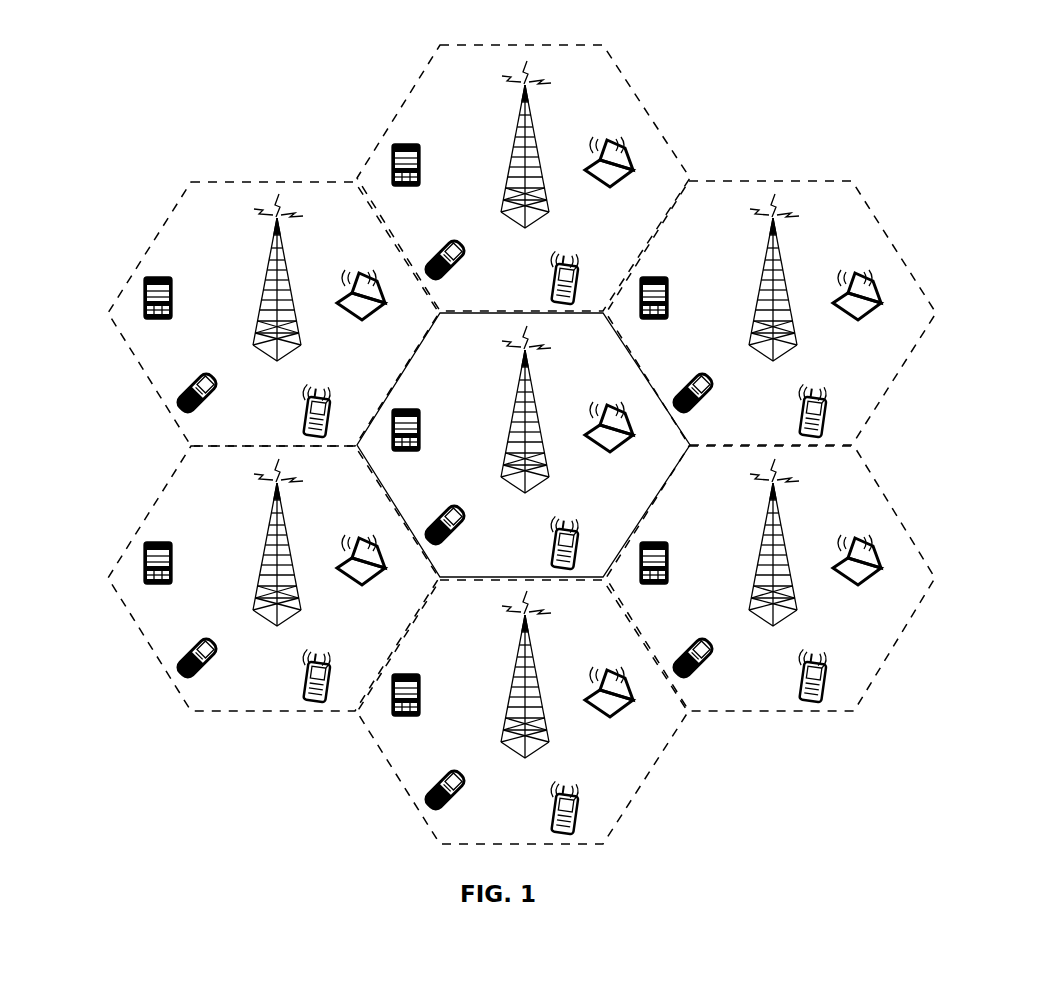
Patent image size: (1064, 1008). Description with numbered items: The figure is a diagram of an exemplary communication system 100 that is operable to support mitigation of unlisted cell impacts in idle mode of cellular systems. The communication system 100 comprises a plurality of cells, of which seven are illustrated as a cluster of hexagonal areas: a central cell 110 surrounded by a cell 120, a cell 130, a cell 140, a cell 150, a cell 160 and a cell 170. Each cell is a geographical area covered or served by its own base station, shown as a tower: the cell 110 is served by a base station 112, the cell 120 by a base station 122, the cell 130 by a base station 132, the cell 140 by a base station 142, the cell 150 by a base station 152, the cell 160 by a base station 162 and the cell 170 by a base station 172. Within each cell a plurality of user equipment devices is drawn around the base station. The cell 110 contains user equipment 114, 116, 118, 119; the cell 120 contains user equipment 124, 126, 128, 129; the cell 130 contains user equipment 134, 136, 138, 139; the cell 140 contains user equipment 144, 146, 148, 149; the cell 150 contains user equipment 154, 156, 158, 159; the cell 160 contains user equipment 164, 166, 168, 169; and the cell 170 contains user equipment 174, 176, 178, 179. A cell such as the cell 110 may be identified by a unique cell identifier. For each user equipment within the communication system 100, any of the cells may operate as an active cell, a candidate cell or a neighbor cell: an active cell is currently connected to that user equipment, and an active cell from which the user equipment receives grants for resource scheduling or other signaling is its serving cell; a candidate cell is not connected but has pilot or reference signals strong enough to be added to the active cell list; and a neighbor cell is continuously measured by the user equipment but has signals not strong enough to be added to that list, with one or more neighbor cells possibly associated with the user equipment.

The communication system 100 is at (963, 48).
The cell 110 is at (523, 445).
The base station 112 is at (542, 401).
The user equipment 114 is at (422, 425).
The user equipment 116 is at (461, 513).
The user equipment 118 is at (579, 545).
The user equipment 119 is at (632, 434).
The cell 120 is at (762, 181).
The base station 122 is at (788, 277).
The user equipment 124 is at (672, 293).
The user equipment 126 is at (707, 385).
The user equipment 128 is at (828, 410).
The user equipment 129 is at (874, 295).
The cell 130 is at (888, 507).
The base station 132 is at (788, 542).
The user equipment 134 is at (672, 558).
The user equipment 136 is at (707, 650).
The user equipment 138 is at (828, 675).
The user equipment 139 is at (874, 560).
The cell 140 is at (653, 768).
The base station 142 is at (540, 674).
The user equipment 144 is at (424, 690).
The user equipment 146 is at (459, 782).
The user equipment 148 is at (580, 807).
The user equipment 149 is at (626, 692).
The cell 150 is at (171, 479).
The base station 152 is at (292, 542).
The user equipment 154 is at (176, 558).
The user equipment 156 is at (211, 650).
The user equipment 158 is at (332, 675).
The user equipment 159 is at (378, 560).
The cell 160 is at (252, 181).
The base station 162 is at (292, 277).
The user equipment 164 is at (176, 293).
The user equipment 166 is at (211, 385).
The user equipment 168 is at (332, 410).
The user equipment 169 is at (378, 295).
The cell 170 is at (626, 83).
The base station 172 is at (540, 144).
The user equipment 174 is at (424, 160).
The user equipment 176 is at (459, 252).
The user equipment 178 is at (580, 277).
The user equipment 179 is at (626, 162).